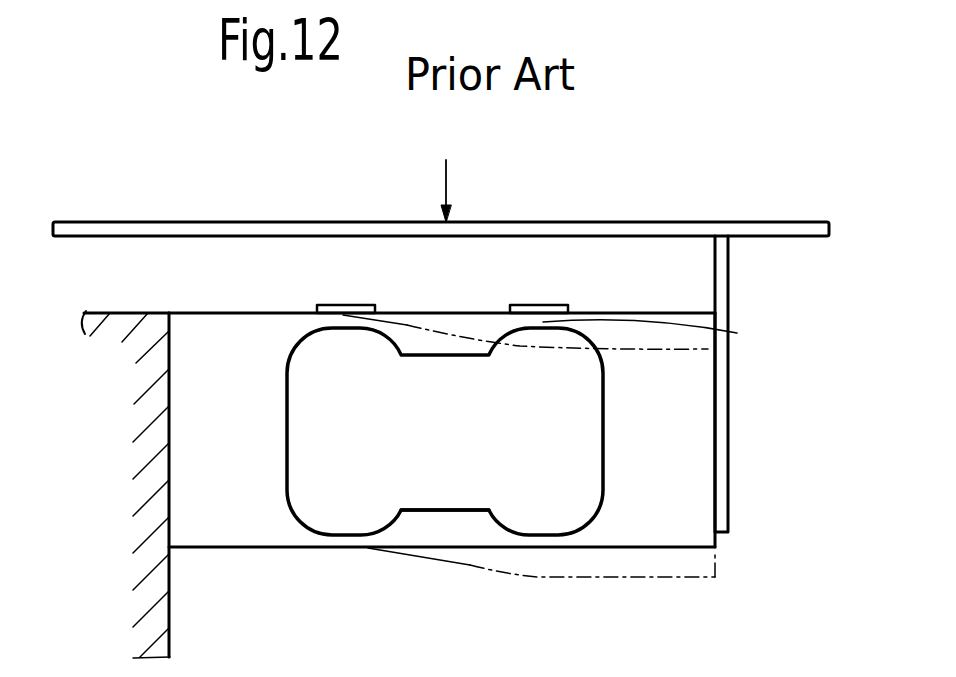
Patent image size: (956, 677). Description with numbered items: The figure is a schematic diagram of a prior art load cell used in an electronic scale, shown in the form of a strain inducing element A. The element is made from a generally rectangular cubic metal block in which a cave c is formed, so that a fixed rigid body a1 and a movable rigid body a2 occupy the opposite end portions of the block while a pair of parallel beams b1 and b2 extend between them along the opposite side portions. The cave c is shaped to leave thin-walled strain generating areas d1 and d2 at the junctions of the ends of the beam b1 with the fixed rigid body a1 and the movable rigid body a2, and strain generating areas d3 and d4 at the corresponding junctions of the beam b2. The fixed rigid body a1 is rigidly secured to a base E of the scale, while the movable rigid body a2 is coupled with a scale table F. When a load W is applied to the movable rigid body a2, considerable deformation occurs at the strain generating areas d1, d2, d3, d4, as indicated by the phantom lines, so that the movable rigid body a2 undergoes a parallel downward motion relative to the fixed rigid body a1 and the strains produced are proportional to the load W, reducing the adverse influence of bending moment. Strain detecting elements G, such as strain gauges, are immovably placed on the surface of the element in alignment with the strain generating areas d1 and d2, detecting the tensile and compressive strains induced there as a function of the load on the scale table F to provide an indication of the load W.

The scale table F is at (613, 222).
The load W is at (445, 173).
The base E is at (93, 322).
The strain detecting elements G is at (324, 303).
The fixed rigid body a1 is at (186, 440).
The movable rigid body a2 is at (695, 428).
The beam b1 is at (442, 315).
The beam b2 is at (488, 535).
The cave c is at (465, 400).
The strain generating area d1 is at (342, 317).
The strain generating area d2 is at (662, 330).
The strain generating area d3 is at (340, 538).
The strain generating area d4 is at (560, 537).
The strain inducing element A is at (432, 535).